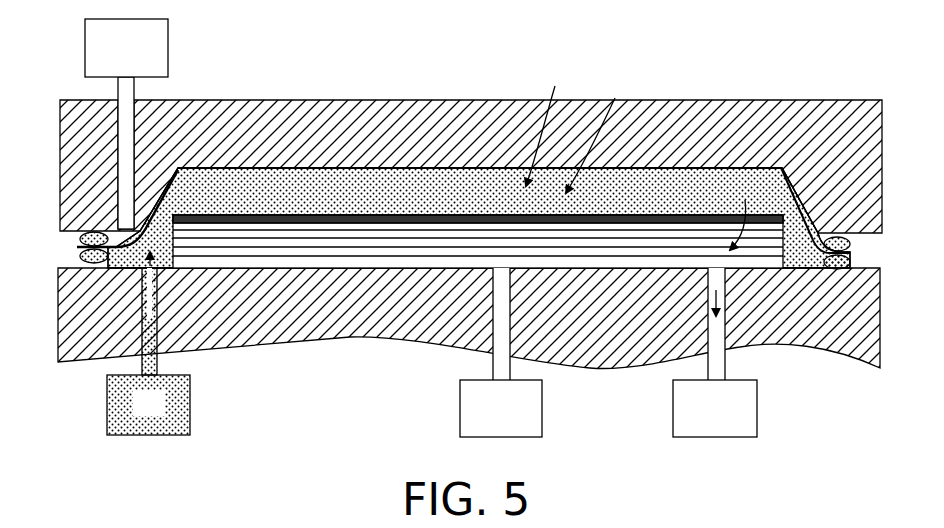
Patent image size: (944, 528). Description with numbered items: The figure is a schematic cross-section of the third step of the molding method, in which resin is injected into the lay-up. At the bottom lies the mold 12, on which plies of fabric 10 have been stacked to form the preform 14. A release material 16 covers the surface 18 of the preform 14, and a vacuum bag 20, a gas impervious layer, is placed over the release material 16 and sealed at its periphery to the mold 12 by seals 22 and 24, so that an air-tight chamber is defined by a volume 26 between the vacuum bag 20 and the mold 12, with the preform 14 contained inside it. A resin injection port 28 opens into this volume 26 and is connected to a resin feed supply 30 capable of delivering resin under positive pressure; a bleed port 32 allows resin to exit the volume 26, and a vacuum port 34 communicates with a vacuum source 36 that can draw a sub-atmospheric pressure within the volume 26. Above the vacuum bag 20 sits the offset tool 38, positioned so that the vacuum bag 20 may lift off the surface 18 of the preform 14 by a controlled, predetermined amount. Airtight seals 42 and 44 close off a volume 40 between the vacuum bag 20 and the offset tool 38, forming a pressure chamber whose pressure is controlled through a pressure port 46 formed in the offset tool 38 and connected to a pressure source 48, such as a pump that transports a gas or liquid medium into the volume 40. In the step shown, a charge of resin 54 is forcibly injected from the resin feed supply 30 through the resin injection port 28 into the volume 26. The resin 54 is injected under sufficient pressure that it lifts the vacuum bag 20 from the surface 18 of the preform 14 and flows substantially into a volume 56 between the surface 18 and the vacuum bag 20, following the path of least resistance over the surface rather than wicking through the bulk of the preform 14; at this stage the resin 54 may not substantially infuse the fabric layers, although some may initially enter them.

The fabric 10 is at (615, 244).
The mold 12 is at (340, 333).
The preform 14 is at (744, 213).
The release material 16 is at (392, 215).
The surface 18 is at (424, 218).
The vacuum bag 20 is at (266, 166).
The seal 22 is at (88, 258).
The seal 24 is at (851, 258).
The volume 26 is at (553, 124).
The resin injection port 28 is at (157, 318).
The resin feed supply 30 is at (148, 405).
The bleed port 32 is at (492, 330).
The vacuum port 34 is at (726, 330).
The vacuum source 36 is at (715, 408).
The offset tool 38 is at (395, 122).
The volume 40 is at (117, 237).
The airtight seal 42 is at (82, 234).
The airtight seal 44 is at (851, 243).
The pressure port 46 is at (113, 120).
The pressure source 48 is at (126, 48).
The charge of resin 54 is at (315, 190).
The volume 56 is at (604, 136).